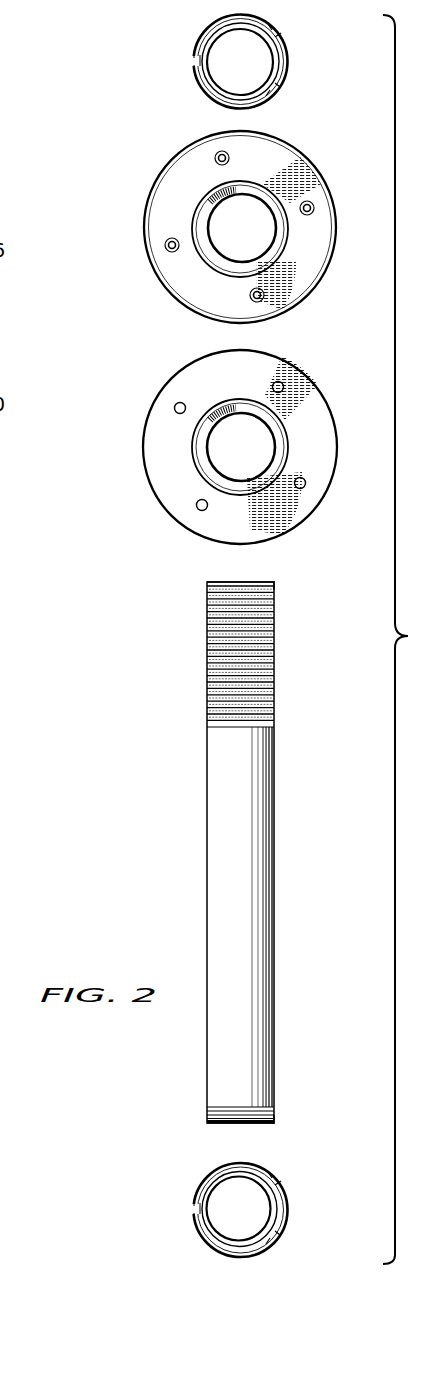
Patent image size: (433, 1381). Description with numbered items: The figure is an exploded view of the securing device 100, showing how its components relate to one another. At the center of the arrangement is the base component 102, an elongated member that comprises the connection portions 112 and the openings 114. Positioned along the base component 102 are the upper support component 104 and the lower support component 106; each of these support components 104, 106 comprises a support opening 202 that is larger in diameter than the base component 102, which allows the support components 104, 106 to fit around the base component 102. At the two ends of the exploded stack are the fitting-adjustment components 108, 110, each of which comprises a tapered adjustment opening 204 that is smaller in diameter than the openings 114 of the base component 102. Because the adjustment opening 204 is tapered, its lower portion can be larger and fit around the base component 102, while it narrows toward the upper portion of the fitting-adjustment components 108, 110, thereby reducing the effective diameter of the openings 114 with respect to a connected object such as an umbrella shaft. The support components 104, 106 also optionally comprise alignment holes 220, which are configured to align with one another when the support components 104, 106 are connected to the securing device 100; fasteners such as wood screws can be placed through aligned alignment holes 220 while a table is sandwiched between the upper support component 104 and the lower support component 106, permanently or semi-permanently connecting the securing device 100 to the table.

The securing device 100 is at (97, 101).
The base component 102 is at (219, 796).
The upper support component 104 is at (156, 160).
The lower support component 106 is at (156, 380).
The fitting-adjustment component 108 is at (194, 61).
The fitting-adjustment component 110 is at (194, 1208).
The connection portions 112 is at (209, 640).
The openings 114 is at (266, 581).
The support openings 202 is at (238, 228).
The tapered adjustment opening 204 is at (240, 61).
The alignment holes 220 is at (313, 206).